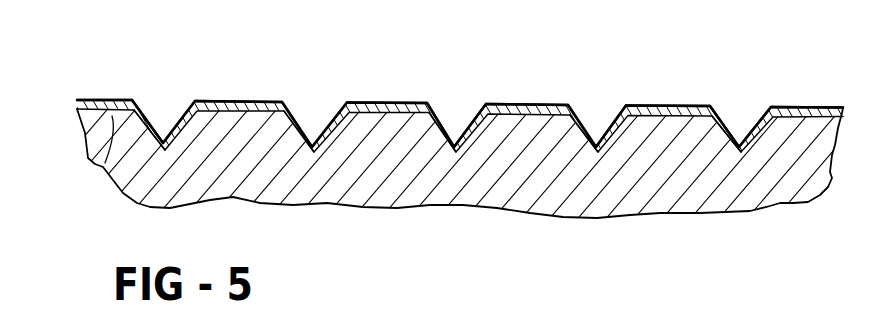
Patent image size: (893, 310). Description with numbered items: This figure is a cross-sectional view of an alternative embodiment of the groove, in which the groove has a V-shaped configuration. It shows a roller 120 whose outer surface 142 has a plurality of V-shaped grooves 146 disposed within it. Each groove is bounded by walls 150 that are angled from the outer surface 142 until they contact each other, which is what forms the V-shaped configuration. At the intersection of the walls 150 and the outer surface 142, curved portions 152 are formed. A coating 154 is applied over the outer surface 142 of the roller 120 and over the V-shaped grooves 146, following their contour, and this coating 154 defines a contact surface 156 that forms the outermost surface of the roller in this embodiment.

The roller 120 is at (282, 180).
The outer surface 142 is at (102, 113).
The V-shaped groove 146 is at (310, 143).
The wall 150 is at (156, 136).
The curved portion 152 is at (103, 167).
The coating 154 is at (262, 110).
The contact surface 156 is at (403, 103).